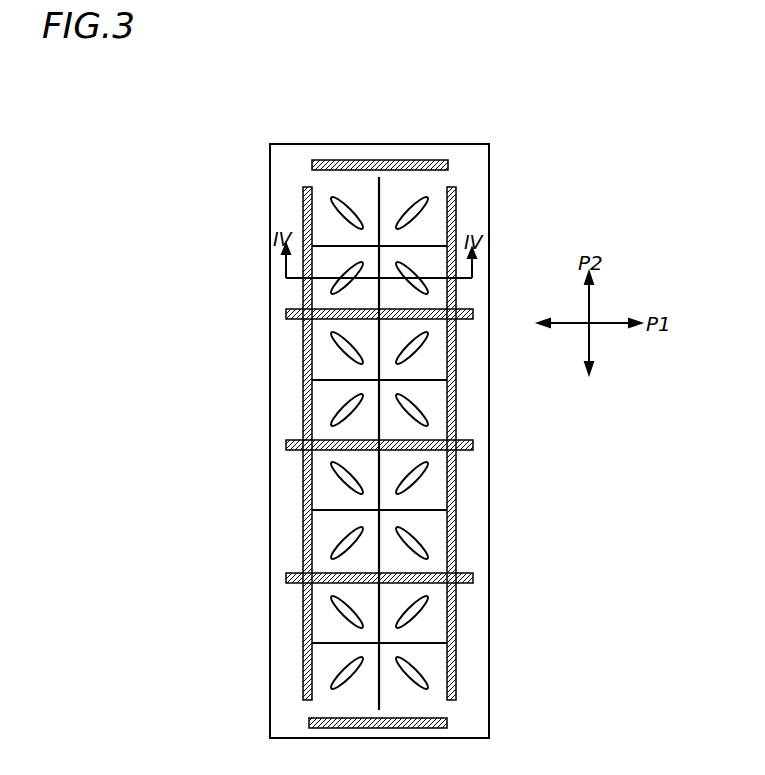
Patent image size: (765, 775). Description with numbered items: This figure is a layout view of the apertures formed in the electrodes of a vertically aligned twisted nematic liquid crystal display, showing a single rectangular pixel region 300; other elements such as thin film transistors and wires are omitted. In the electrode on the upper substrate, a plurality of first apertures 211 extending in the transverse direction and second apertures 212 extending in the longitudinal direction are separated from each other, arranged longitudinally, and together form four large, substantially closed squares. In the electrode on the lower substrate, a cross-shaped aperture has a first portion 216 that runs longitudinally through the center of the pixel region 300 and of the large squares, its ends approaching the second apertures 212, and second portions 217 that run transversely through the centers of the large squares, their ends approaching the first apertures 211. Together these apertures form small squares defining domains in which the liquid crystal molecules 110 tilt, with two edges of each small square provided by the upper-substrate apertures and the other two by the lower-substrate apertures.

The liquid crystal molecules 110 is at (426, 418).
The first apertures 211 is at (456, 229).
The second apertures 212 is at (289, 317).
The first portion of the cross-shaped aperture 216 is at (380, 185).
The second portions of the cross-shaped aperture 217 is at (312, 242).
The pixel region 300 is at (489, 635).